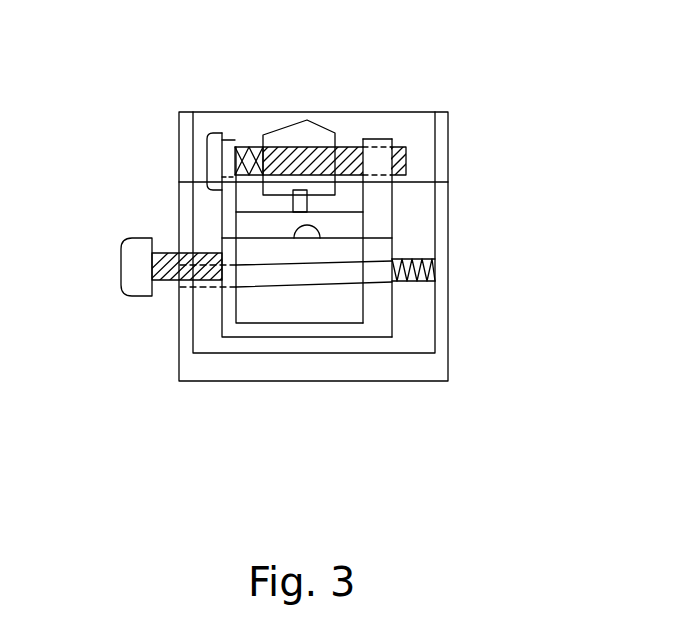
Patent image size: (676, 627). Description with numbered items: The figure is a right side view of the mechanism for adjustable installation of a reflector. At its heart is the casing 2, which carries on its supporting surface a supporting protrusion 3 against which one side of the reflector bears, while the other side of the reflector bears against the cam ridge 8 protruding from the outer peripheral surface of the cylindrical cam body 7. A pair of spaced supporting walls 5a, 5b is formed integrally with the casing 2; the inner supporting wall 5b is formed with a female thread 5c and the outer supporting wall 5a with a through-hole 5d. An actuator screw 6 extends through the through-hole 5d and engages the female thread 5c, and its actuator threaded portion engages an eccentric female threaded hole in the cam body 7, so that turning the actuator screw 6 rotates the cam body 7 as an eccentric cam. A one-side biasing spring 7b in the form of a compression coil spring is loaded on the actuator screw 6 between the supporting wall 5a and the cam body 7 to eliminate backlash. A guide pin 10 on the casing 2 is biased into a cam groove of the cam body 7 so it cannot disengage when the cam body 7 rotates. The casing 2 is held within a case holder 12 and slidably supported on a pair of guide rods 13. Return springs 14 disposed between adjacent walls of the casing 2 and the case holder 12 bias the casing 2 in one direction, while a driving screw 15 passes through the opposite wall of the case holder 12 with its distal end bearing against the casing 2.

The casing 2 is at (387, 315).
The supporting protrusion 3 is at (302, 233).
The supporting wall 5a is at (230, 308).
The supporting wall 5b is at (380, 197).
The female thread 5c is at (373, 150).
The through-hole 5d is at (228, 135).
The actuator screw 6 is at (210, 147).
The cam body 7 is at (305, 125).
The one-side biasing spring 7b is at (247, 147).
The cam ridge 8 is at (287, 132).
The guide pin 10 is at (299, 203).
The case holder 12 is at (388, 363).
The guide rods 13 is at (280, 278).
The return springs 14 is at (435, 272).
The driving screw 15 is at (160, 252).